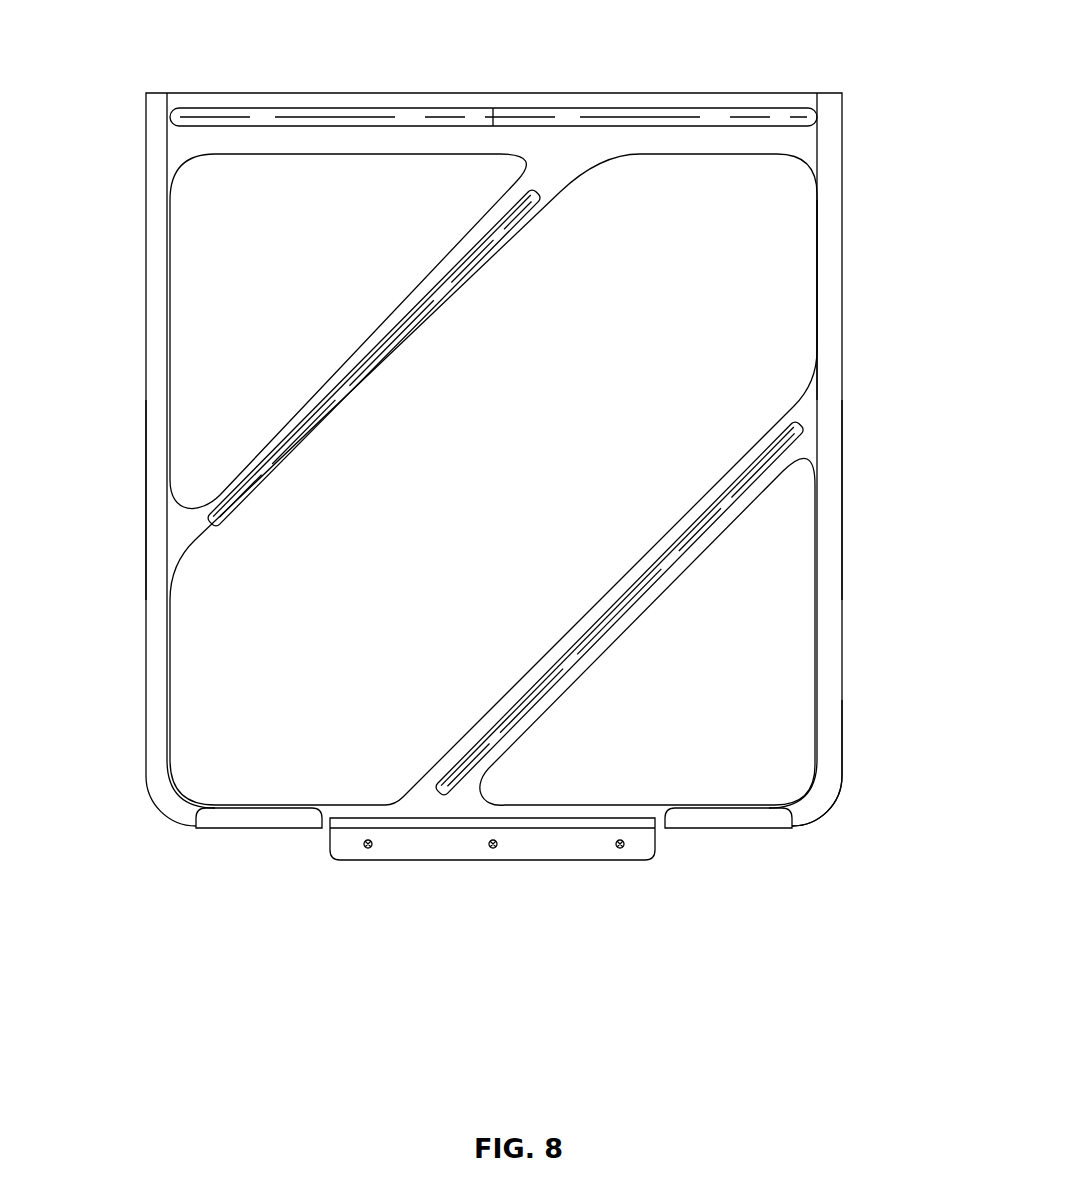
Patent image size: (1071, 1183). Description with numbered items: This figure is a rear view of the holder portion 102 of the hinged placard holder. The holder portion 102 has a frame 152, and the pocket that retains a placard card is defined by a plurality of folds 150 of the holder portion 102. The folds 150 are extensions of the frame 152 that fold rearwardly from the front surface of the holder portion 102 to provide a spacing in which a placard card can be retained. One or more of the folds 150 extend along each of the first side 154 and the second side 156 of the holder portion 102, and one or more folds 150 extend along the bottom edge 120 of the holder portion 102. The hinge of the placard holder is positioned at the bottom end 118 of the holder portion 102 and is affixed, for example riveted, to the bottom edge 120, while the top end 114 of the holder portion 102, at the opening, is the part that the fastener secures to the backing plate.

The holder portion 102 is at (852, 73).
The top end 114 is at (833, 157).
The bottom end 118 is at (852, 765).
The bottom edge 120 is at (700, 831).
The folds 150 is at (157, 684).
The frame 152 is at (832, 318).
The first side 154 is at (130, 483).
The second side 156 is at (852, 483).